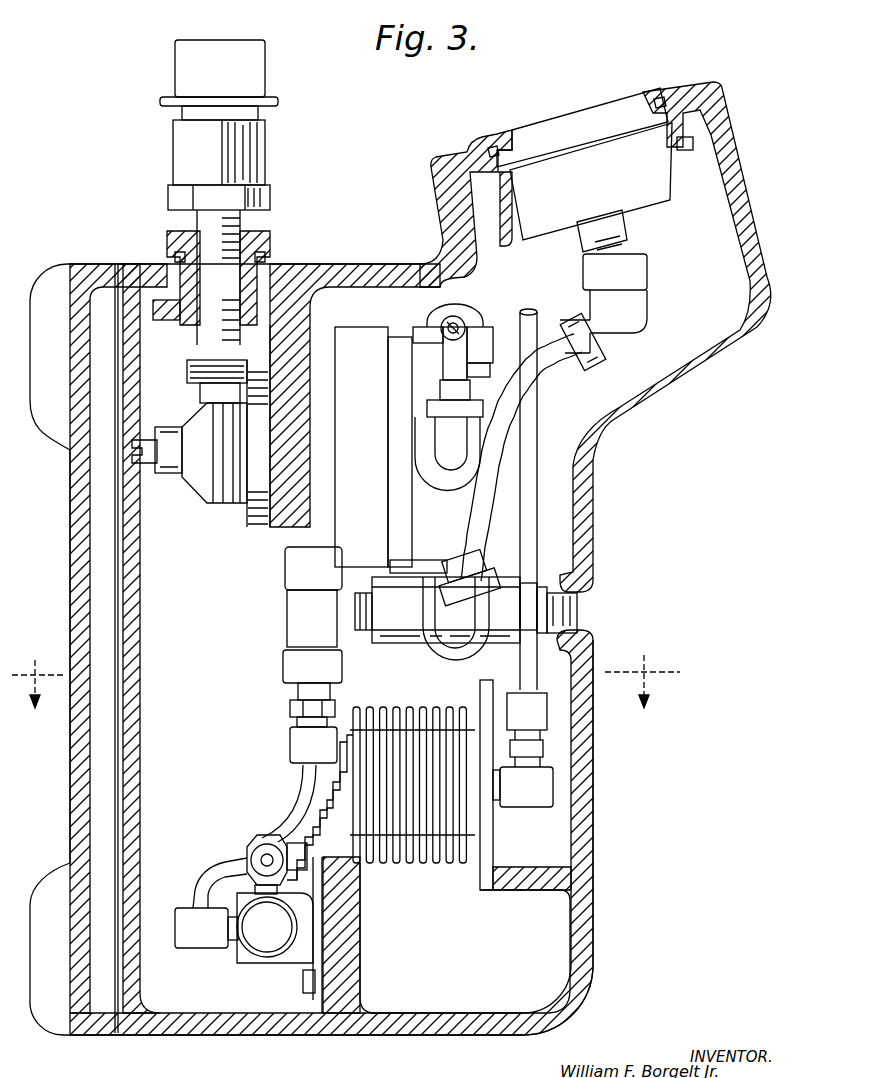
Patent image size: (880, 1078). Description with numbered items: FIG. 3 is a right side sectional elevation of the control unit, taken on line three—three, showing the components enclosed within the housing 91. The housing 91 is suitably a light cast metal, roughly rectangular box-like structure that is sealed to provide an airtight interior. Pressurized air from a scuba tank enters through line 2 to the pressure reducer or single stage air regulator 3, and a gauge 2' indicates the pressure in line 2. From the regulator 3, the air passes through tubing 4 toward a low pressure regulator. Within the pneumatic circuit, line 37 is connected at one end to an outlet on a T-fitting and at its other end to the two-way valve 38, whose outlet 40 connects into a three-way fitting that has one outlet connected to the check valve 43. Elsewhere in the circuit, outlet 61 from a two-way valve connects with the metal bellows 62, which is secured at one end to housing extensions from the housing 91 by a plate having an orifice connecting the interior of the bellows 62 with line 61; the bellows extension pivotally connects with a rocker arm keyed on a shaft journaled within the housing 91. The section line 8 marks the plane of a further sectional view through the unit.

The line 2 is at (215, 283).
The gauge 2' is at (591, 225).
The pressure reducer or single stage air regulator 3 is at (181, 527).
The tubing 4 is at (460, 326).
The section line 8- 8 is at (346, 668).
The line 37 is at (261, 859).
The two-way valve 38 is at (267, 940).
The outlet 40 is at (313, 790).
The check valve 43 is at (397, 612).
The outlet line 61 is at (533, 500).
The metal bellows 62 is at (397, 718).
The housing 91 is at (738, 163).